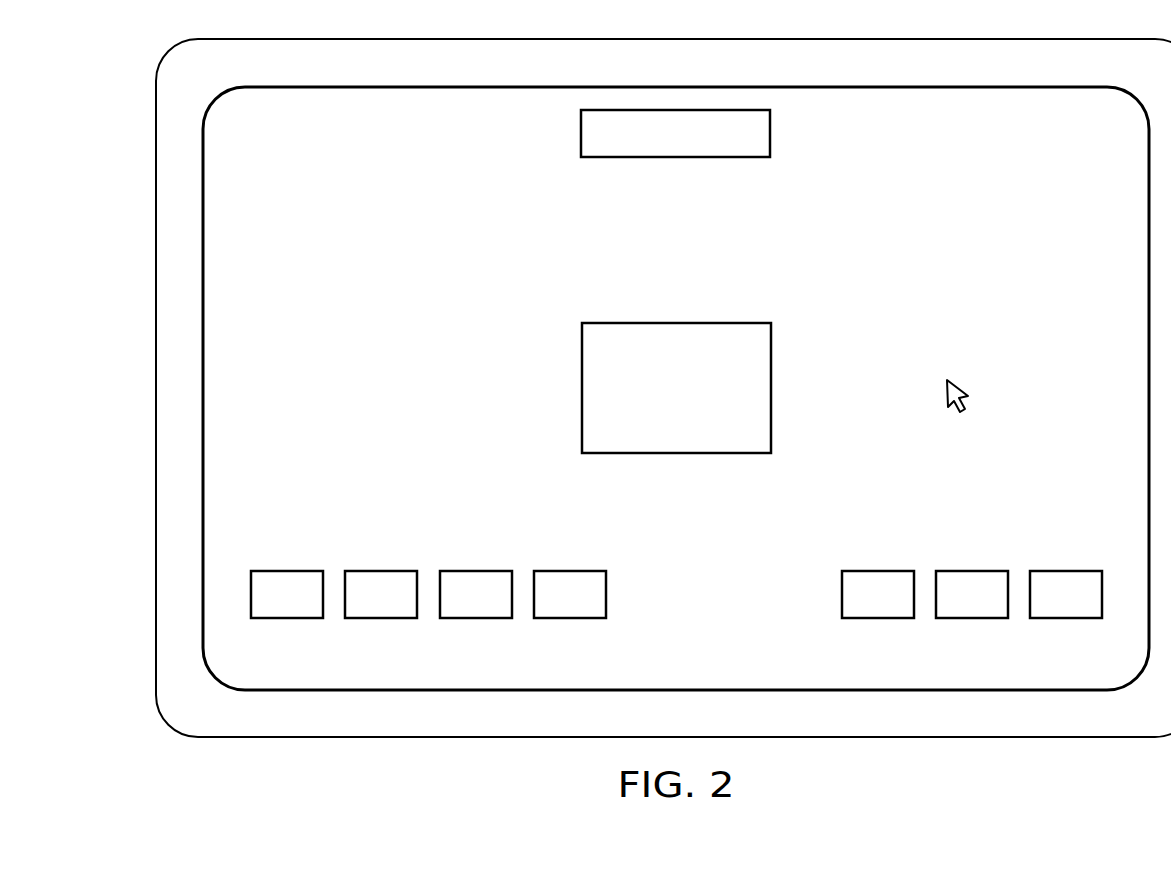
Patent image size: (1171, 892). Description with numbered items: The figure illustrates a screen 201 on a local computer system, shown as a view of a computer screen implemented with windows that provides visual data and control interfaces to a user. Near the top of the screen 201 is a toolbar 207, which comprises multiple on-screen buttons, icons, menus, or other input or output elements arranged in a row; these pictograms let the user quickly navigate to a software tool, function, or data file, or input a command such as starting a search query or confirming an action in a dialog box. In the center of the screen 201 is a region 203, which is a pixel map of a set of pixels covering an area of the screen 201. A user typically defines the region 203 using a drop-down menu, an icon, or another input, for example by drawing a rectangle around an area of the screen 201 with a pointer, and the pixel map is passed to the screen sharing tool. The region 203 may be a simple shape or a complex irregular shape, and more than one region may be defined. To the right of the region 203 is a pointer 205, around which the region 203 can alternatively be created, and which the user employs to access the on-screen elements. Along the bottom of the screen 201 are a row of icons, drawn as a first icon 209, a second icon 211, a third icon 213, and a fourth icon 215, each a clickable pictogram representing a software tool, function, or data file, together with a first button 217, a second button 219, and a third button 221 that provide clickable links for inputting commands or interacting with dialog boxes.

The screen 201 is at (452, 421).
The region 203 is at (771, 393).
The pointer 205 is at (960, 393).
The toolbar 207 is at (581, 133).
The icon I1 209 is at (287, 618).
The icon I2 211 is at (381, 618).
The icon I3 213 is at (476, 618).
The icon I4 215 is at (570, 618).
The button B1 217 is at (876, 618).
The button B2 219 is at (971, 618).
The button B3 221 is at (1065, 618).